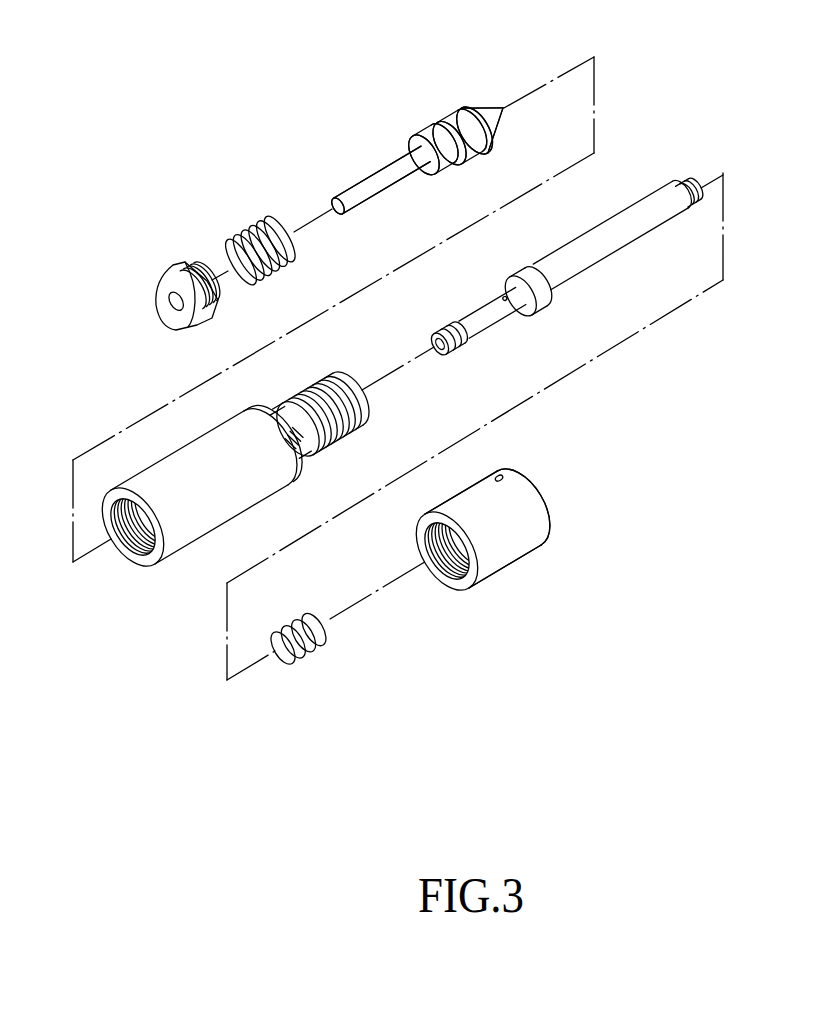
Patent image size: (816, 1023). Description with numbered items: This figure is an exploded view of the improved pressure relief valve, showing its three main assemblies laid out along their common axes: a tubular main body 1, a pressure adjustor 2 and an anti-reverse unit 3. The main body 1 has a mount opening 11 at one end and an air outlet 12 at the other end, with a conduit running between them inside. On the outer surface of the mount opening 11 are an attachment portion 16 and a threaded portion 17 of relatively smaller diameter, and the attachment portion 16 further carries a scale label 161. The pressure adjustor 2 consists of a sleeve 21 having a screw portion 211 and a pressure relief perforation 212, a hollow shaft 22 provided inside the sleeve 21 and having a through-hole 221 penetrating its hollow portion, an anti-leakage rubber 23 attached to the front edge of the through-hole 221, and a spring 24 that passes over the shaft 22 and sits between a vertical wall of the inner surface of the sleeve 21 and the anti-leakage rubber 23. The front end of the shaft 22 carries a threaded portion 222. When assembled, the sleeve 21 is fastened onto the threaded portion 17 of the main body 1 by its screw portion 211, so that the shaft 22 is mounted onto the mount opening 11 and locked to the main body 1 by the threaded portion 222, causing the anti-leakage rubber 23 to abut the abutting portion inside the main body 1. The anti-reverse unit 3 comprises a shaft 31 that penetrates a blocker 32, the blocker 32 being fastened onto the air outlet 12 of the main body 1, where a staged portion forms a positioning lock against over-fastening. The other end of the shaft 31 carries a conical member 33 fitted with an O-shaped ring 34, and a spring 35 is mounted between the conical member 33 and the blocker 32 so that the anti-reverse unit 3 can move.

The tubular main body 1 is at (173, 556).
The mount opening 11 is at (357, 400).
The air outlet 12 is at (122, 560).
The attachment portion 16 is at (268, 400).
The threaded portion 17 is at (340, 448).
The scale label 161 is at (280, 432).
The pressure adjustor 2 is at (511, 578).
The sleeve 21 is at (537, 550).
The screw portion 211 is at (440, 572).
The pressure relief perforation 212 is at (513, 480).
The hollow shaft 22 is at (654, 194).
The through-hole 221 is at (502, 282).
The threaded portion 222 is at (473, 328).
The anti-leakage rubber 23 is at (541, 310).
The spring 24 is at (308, 655).
The anti-reverse unit 3 is at (393, 150).
The shaft 31 is at (380, 172).
The blocker 32 is at (178, 264).
The conical member 33 is at (479, 108).
The O-shaped ring 34 is at (448, 112).
The spring 35 is at (258, 222).